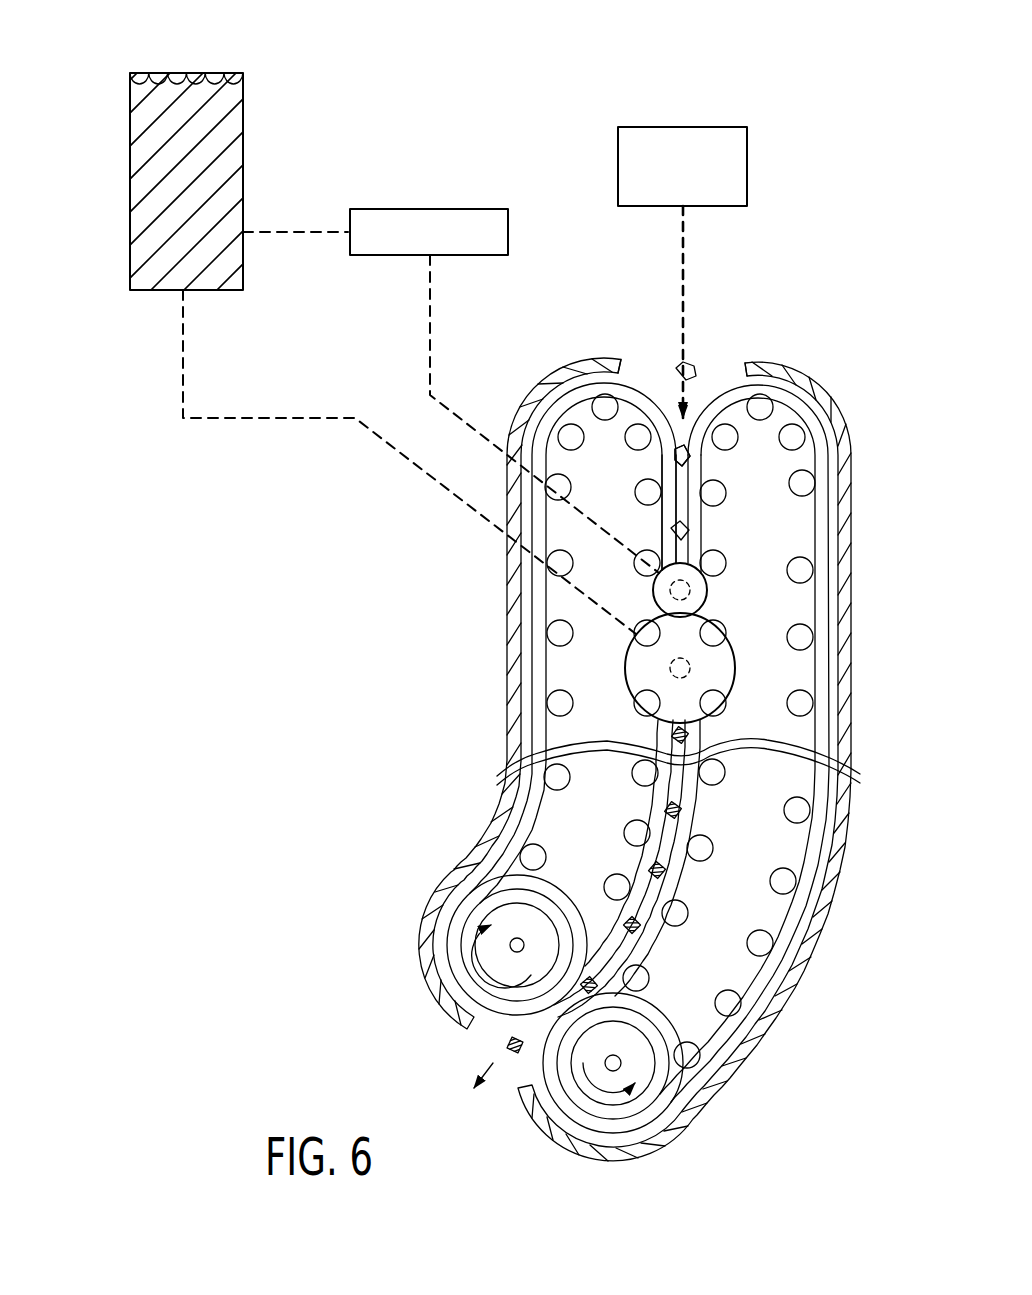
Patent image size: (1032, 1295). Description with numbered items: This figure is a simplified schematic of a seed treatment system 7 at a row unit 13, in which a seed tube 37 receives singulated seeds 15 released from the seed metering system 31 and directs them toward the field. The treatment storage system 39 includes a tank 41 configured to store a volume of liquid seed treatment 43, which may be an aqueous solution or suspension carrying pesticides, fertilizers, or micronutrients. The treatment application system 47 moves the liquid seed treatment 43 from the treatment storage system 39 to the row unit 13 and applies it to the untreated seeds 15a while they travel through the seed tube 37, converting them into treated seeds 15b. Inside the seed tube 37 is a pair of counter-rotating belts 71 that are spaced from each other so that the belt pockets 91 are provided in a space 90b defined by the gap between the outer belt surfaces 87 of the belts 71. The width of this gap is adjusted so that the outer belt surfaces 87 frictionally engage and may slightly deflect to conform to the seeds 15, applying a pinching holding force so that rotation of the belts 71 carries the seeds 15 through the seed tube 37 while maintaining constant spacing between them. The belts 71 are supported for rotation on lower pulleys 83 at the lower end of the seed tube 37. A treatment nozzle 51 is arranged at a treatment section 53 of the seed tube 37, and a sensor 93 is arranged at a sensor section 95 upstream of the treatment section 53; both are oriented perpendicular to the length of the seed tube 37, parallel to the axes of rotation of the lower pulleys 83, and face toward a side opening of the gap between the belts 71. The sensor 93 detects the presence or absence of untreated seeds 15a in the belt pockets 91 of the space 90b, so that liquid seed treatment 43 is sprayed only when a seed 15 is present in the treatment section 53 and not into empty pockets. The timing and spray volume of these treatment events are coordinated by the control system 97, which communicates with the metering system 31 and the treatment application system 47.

The seed treatment system 7 is at (348, 585).
The row unit 13 is at (665, 1180).
The seeds 15 is at (666, 350).
The untreated seeds 15a is at (695, 360).
The treated seeds 15b is at (690, 738).
The seed metering system 31 is at (689, 123).
The seed tube 37 is at (466, 792).
The treatment storage system 39 is at (283, 68).
The tank 41 is at (126, 117).
The liquid seed treatment 43 is at (146, 172).
The treatment application system 47 is at (795, 680).
The treatment nozzle 51 is at (640, 652).
The treatment section 53 is at (749, 645).
The belts 71 is at (563, 389).
The lower pulleys 83 is at (508, 915).
The outer belt surfaces 87 is at (633, 378).
The space 90b is at (668, 521).
The belt pockets 91 is at (705, 450).
The sensor 93 is at (662, 583).
The sensor section 95 is at (718, 585).
The control system 97 is at (438, 195).